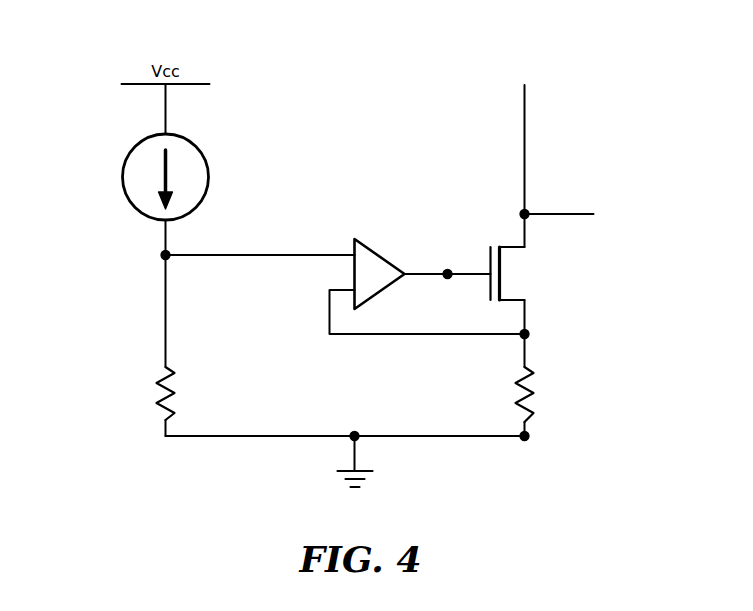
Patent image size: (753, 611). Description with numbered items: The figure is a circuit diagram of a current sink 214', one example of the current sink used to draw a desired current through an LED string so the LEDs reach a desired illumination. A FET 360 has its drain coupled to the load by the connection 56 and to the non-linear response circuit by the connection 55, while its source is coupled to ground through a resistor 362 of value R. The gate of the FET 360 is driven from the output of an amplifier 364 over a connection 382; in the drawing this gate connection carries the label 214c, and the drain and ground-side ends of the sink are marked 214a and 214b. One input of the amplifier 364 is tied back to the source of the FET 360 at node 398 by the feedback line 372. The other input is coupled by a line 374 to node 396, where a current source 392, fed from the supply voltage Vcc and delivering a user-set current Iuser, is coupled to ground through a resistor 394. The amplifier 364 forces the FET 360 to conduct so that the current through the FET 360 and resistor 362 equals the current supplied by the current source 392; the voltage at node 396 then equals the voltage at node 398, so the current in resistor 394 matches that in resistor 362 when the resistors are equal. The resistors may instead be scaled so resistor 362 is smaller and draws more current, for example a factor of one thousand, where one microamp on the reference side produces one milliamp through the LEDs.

The current source 392 is at (130, 150).
The node 396 is at (160, 258).
The connection to op-amp input 374 is at (257, 258).
The resistor 394 is at (160, 392).
The amplifier 364 is at (380, 252).
The connection 382 is at (427, 268).
The connection node 214c is at (445, 279).
The feedback line 372 is at (343, 334).
The FET 360 is at (523, 272).
The connection 56 is at (523, 158).
The connection node 214a is at (523, 210).
The connection 55 is at (575, 212).
The current sink 214' is at (559, 28).
The node 398 is at (528, 337).
The resistor 362 is at (520, 392).
The connection node 214b is at (528, 437).